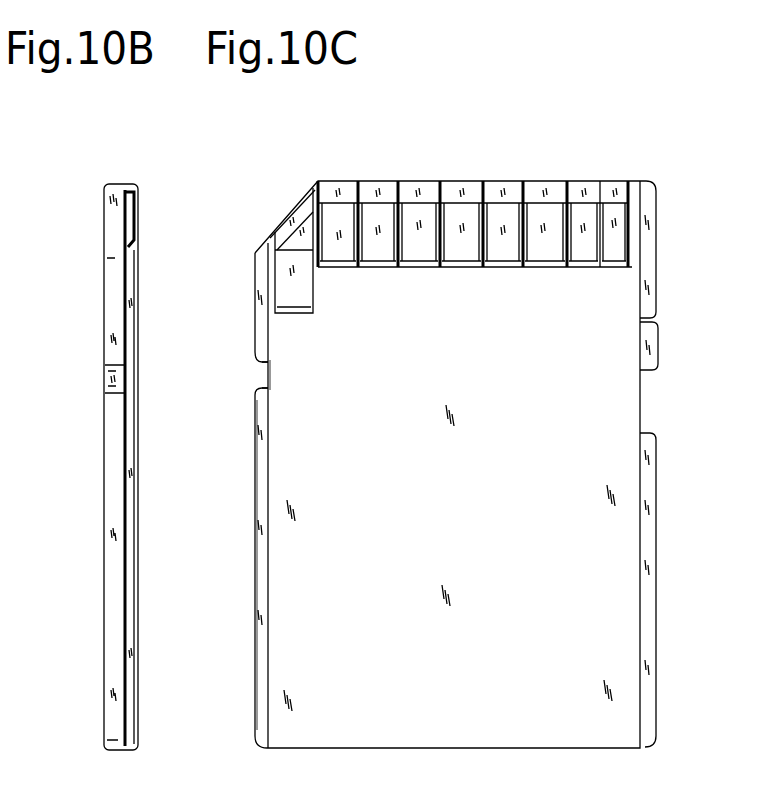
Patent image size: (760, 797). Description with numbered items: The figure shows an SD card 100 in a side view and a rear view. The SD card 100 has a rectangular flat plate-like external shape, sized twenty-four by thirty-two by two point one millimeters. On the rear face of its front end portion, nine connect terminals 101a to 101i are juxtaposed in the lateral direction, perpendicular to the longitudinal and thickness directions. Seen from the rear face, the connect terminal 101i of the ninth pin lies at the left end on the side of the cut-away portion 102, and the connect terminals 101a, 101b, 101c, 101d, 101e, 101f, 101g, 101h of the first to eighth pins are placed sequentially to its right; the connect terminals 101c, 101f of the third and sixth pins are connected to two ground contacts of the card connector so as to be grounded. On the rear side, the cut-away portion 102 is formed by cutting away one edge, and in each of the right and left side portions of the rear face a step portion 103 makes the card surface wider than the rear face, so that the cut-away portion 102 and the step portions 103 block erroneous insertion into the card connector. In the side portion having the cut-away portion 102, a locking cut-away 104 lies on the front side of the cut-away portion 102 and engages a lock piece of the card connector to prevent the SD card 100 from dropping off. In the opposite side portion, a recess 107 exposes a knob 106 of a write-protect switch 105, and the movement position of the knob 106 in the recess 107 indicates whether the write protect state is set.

In FIG. 10C, the SD card 100 is at (473, 508).
In FIG. 10C, the connect terminal 101a is at (337, 213).
In FIG. 10C, the connect terminal 101b is at (380, 250).
In FIG. 10C, the connect terminal 101c is at (418, 212).
In FIG. 10C, the connect terminal 101d is at (460, 265).
In FIG. 10C, the connect terminal 101e is at (500, 212).
In FIG. 10C, the connect terminal 101f is at (538, 258).
In FIG. 10C, the connect terminal 101g is at (578, 212).
In FIG. 10C, the connect terminal 101h is at (612, 262).
In FIG. 10C, the connect terminal 101i is at (296, 300).
In FIG. 10B, the cut-away portion 102 is at (110, 218).
In FIG. 10C, the cut-away portion 102 is at (287, 217).
In FIG. 10B, the step portion 103 is at (130, 470).
In FIG. 10C, the step portion 103 is at (260, 535).
In FIG. 10B, the locking cut-away 104 is at (108, 379).
In FIG. 10C, the locking cut-away 104 is at (262, 367).
In FIG. 10C, the write-protect switch 105 is at (668, 308).
In FIG. 10C, the knob 106 is at (658, 350).
In FIG. 10C, the recess 107 is at (643, 432).